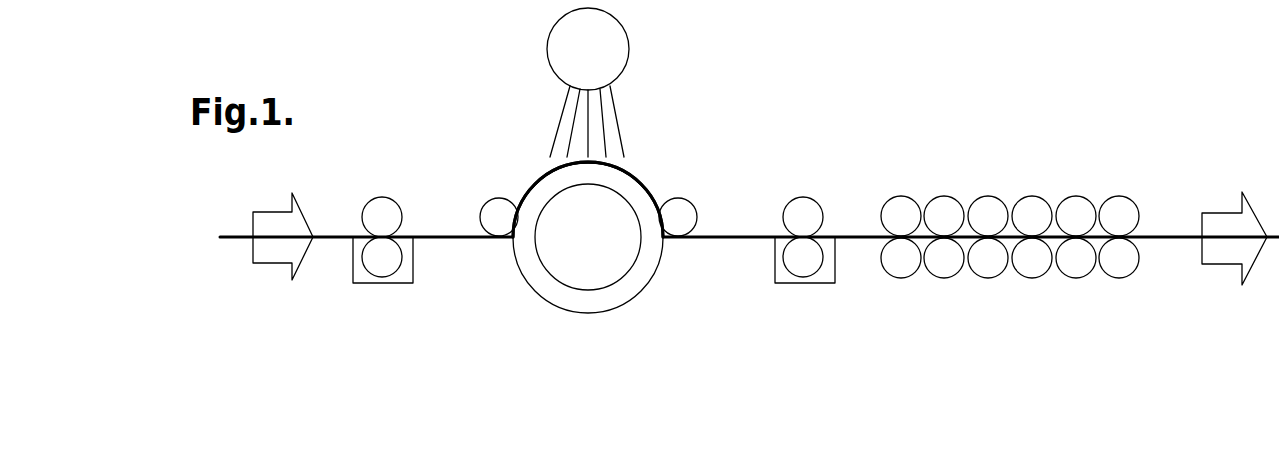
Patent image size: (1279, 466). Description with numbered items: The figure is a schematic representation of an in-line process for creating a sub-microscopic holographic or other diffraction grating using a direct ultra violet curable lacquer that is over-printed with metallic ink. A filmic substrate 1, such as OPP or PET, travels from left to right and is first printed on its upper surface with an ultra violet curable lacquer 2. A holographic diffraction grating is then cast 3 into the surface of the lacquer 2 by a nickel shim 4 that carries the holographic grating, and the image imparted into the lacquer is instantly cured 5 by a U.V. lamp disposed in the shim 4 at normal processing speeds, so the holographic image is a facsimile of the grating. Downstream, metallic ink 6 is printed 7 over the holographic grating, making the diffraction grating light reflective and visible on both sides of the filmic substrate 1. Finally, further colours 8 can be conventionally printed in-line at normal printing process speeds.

The filmic substrate 1 is at (230, 240).
The ultra violet curable lacquer 2 is at (360, 273).
The casting of holographic diffraction grating 3 is at (552, 197).
The nickel shim 4 is at (637, 175).
The curing 5 is at (548, 48).
The metallic ink 6 is at (783, 277).
The printing of metallic ink 7 is at (812, 212).
The further colours 8 is at (903, 280).